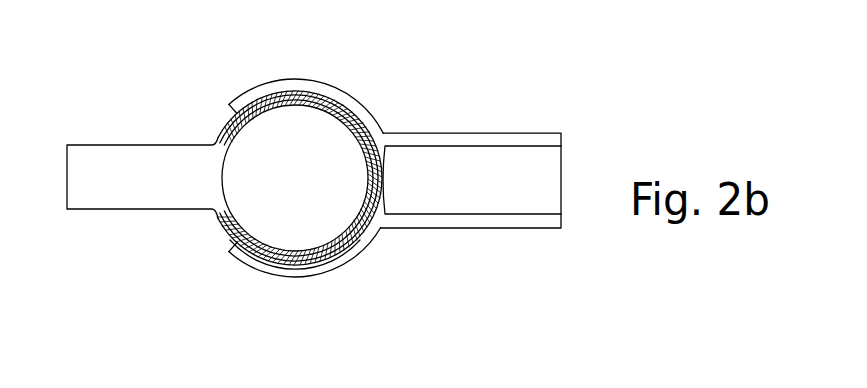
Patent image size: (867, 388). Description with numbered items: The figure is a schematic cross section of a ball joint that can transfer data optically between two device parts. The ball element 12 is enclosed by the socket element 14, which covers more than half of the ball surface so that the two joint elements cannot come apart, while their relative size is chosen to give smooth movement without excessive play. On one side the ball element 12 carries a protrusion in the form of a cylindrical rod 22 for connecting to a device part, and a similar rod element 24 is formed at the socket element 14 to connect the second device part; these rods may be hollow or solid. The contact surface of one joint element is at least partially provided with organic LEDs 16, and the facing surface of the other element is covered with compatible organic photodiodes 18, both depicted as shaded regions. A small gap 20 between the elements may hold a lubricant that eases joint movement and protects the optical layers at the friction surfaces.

The ball element 12 is at (234, 207).
The socket element 14 is at (345, 93).
The organic LEDs 16 is at (328, 256).
The organic photodiodes 18 is at (373, 233).
The gap 20 is at (305, 92).
The cylindrical rod 22 is at (102, 157).
The rod element 24 is at (512, 144).